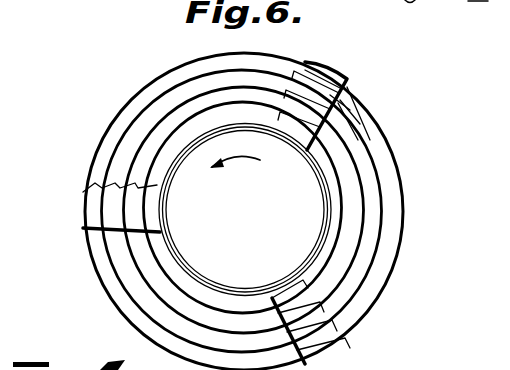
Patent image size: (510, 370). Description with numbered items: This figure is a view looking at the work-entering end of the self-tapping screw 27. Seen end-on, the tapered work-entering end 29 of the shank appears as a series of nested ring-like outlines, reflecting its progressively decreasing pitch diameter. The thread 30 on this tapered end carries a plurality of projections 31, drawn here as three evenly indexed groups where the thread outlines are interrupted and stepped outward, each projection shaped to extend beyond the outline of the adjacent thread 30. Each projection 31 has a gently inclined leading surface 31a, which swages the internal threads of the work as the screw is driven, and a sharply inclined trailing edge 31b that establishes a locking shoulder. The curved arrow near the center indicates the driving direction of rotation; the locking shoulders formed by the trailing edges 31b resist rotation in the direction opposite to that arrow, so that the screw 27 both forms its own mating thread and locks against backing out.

The self-tapping screw 27 is at (407, 162).
The tapered work-entering end 29 is at (323, 227).
The thread 30 is at (188, 128).
The projections 31 is at (308, 88).
The leading surfaces 31a is at (314, 72).
The trailing edges 31b is at (330, 120).